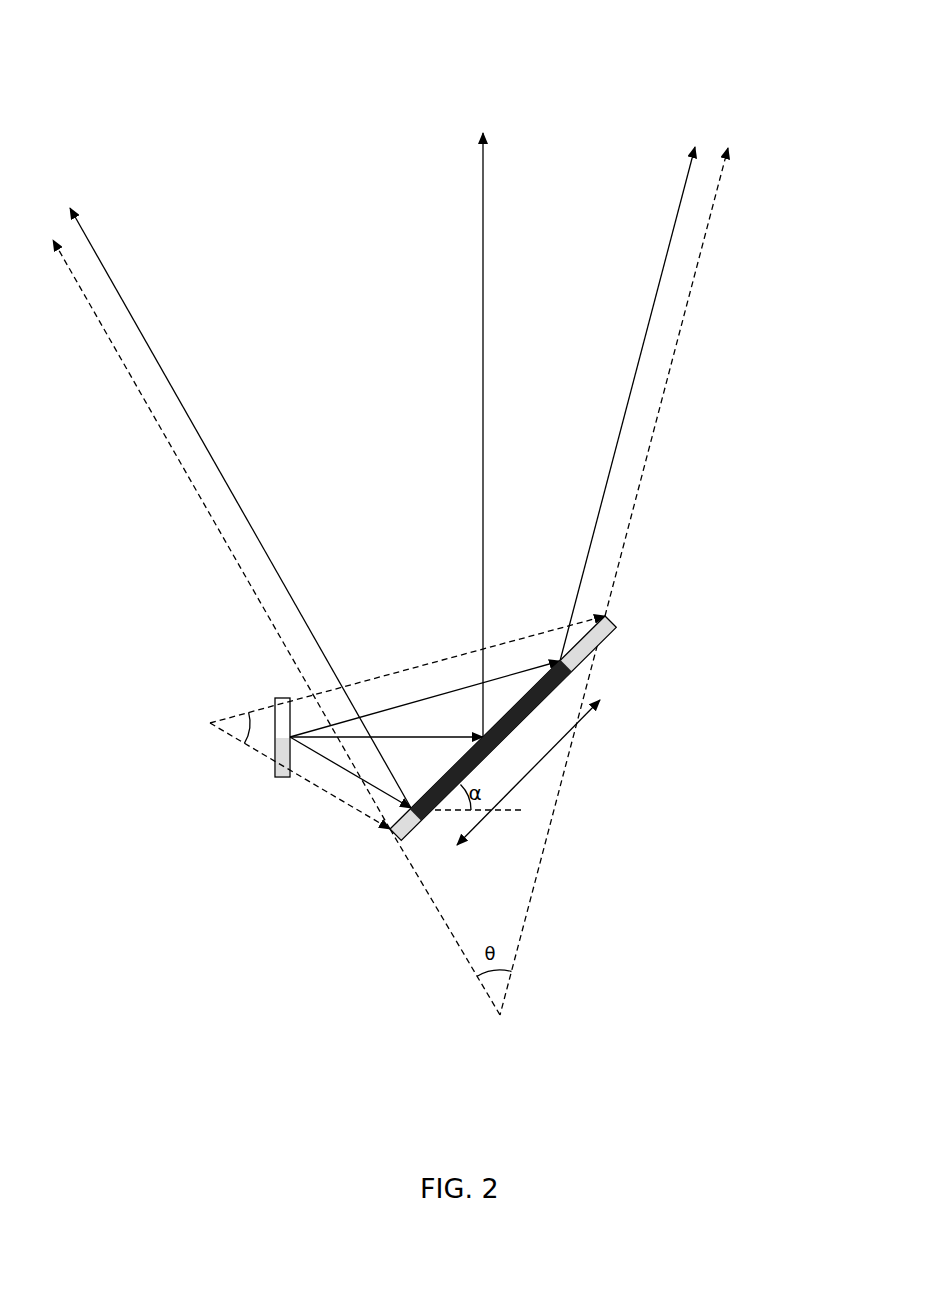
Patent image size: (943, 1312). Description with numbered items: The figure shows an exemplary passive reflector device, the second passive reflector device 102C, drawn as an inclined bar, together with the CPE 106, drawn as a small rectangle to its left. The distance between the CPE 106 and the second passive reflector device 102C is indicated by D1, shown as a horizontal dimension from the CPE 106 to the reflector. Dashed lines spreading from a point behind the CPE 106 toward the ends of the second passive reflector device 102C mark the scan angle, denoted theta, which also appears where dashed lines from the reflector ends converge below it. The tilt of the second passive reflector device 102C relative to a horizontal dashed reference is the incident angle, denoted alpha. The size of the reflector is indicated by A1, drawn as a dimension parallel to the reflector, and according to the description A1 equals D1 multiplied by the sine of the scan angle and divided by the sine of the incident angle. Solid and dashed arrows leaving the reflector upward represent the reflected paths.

The second passive reflector device 102C is at (402, 835).
The CPE 106 is at (275, 777).
The distance between the CPE and the second passive reflector device D1 is at (386, 725).
The size of the second passive reflector device A1 is at (528, 772).